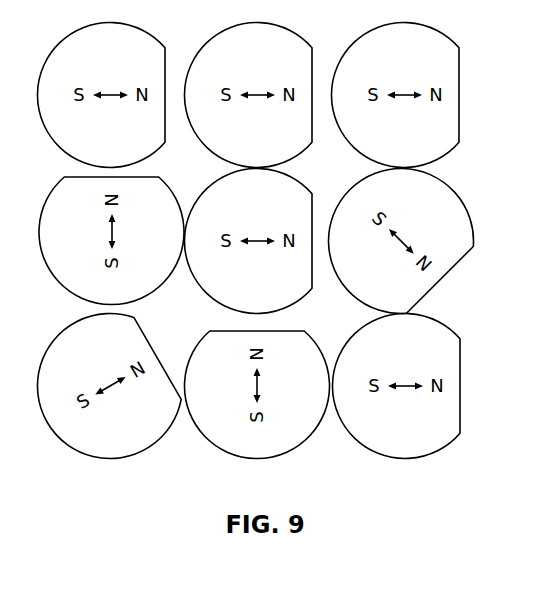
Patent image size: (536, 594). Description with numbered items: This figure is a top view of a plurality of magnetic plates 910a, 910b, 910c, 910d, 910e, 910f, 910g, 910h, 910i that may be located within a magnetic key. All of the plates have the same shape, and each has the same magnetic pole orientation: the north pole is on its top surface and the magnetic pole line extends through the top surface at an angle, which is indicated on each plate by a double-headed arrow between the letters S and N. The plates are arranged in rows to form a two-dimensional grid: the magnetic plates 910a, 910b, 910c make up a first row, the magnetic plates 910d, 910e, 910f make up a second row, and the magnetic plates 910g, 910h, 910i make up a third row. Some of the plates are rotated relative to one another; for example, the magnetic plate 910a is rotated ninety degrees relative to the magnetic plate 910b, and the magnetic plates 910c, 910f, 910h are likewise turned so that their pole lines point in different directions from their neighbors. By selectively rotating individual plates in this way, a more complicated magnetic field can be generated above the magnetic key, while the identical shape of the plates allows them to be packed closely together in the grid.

The magnetic plate 910a is at (101, 94).
The magnetic plate 910b is at (111, 241).
The magnetic plate 910c is at (109, 385).
The magnetic plate 910d is at (248, 94).
The magnetic plate 910e is at (248, 241).
The magnetic plate 910f is at (257, 395).
The magnetic plate 910g is at (395, 94).
The magnetic plate 910h is at (401, 241).
The magnetic plate 910i is at (396, 385).